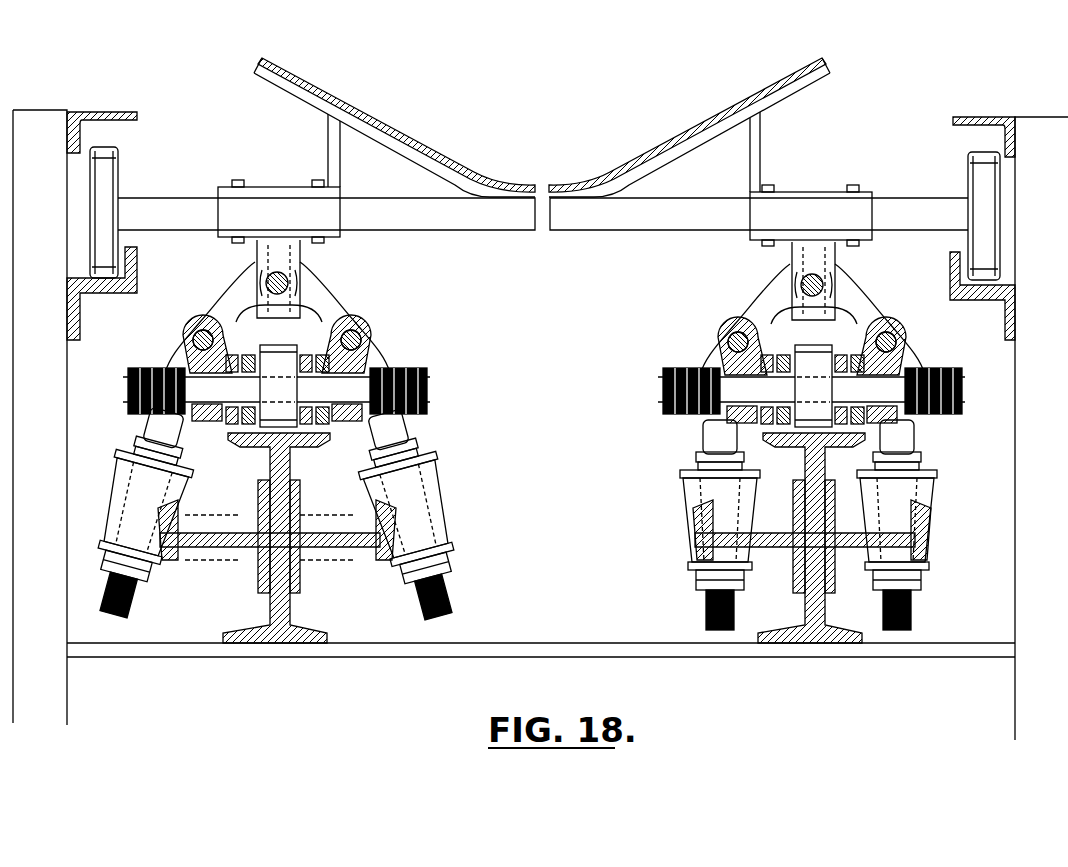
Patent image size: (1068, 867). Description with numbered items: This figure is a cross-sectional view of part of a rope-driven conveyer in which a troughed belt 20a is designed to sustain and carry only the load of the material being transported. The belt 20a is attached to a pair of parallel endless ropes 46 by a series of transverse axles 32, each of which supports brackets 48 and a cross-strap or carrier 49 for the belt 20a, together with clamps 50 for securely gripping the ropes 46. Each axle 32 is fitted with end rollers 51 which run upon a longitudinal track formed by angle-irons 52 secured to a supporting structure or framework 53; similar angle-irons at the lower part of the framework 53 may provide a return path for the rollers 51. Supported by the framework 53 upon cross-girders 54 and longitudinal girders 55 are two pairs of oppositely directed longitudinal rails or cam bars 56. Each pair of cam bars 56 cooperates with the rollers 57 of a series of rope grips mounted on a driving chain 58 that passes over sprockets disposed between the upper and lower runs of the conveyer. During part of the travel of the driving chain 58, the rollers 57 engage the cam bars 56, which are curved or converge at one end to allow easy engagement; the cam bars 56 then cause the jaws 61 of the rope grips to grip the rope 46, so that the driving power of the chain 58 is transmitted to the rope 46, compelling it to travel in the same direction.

The troughed belt 20a is at (370, 121).
The transverse axle 32 is at (543, 214).
The endless rope 46 is at (265, 285).
The bracket 48 is at (328, 140).
The cross-strap or carrier 49 is at (688, 156).
The clamp 50 is at (298, 254).
The end roller 51 is at (107, 180).
The angle-iron 52 is at (135, 273).
The supporting structure or framework 53 is at (540, 425).
The cross-girder 54 is at (564, 656).
The longitudinal girder 55 is at (284, 461).
The cam bar 56 is at (178, 548).
The roller 57 is at (950, 494).
The driving chain 58 is at (315, 352).
The jaw 61 is at (225, 305).